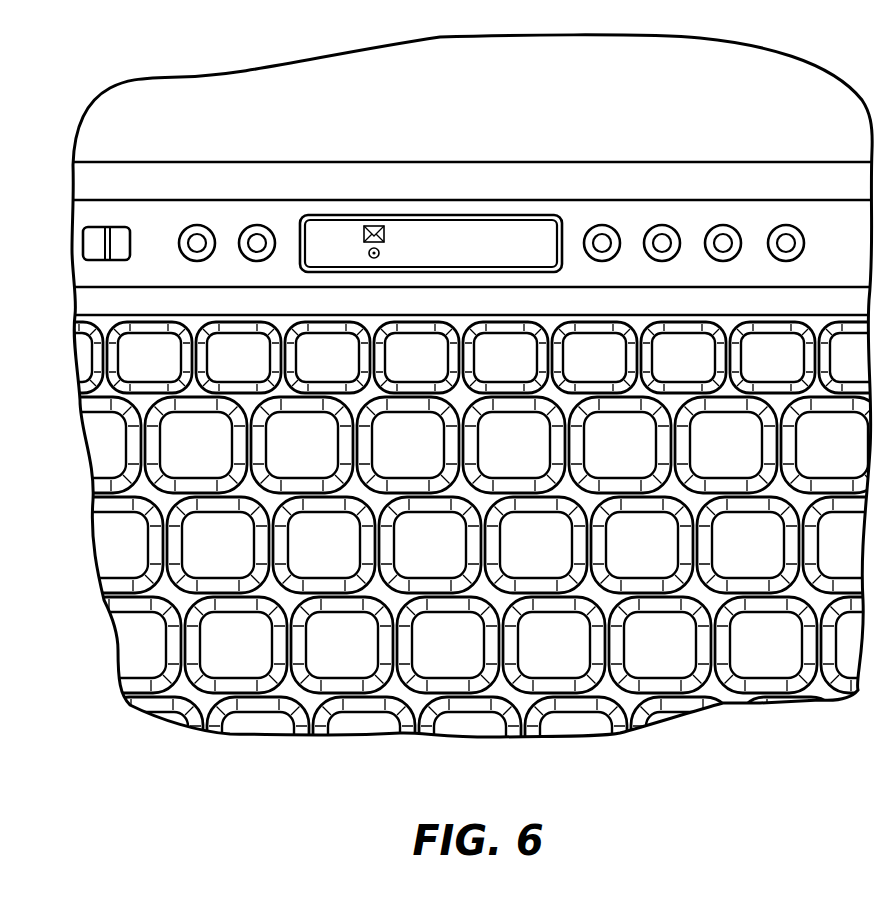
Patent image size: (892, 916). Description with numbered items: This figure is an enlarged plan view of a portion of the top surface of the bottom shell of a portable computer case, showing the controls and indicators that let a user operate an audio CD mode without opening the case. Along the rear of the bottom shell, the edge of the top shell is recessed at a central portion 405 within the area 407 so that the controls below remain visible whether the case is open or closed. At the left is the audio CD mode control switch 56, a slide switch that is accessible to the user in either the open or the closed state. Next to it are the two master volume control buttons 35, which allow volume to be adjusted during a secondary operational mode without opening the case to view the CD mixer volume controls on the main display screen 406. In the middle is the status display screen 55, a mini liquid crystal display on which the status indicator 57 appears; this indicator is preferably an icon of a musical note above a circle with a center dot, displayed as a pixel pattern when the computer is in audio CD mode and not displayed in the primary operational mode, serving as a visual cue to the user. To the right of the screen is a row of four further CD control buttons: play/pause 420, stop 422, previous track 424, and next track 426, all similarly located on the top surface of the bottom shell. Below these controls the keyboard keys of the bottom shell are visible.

The main display screen 406 is at (433, 80).
The central portion 405 is at (571, 222).
The area 407 is at (290, 224).
The audio CD mode control switch 56 is at (105, 225).
The master volume control buttons 35 is at (240, 222).
The status display screen 55 is at (460, 214).
The status indicator 57 is at (373, 221).
The play/pause button 420 is at (602, 222).
The stop button 422 is at (662, 222).
The previous track button 424 is at (723, 222).
The next track button 426 is at (786, 222).